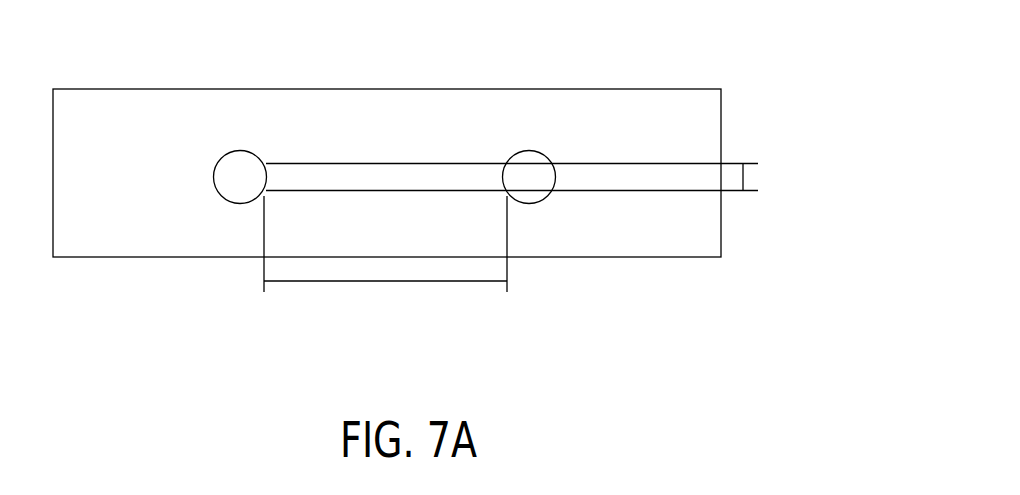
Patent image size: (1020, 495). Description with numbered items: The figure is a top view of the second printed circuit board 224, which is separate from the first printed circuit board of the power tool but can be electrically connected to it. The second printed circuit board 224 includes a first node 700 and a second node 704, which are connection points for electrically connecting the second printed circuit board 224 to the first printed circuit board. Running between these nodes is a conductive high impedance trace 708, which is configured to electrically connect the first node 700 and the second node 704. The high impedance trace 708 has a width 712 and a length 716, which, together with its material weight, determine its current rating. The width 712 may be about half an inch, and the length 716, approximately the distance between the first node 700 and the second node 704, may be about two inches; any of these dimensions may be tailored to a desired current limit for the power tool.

The second printed circuit board 224 is at (402, 89).
The first node 700 is at (238, 150).
The second node 704 is at (532, 151).
The high impedance trace 708 is at (352, 162).
The width 712 is at (747, 175).
The length 716 is at (382, 283).